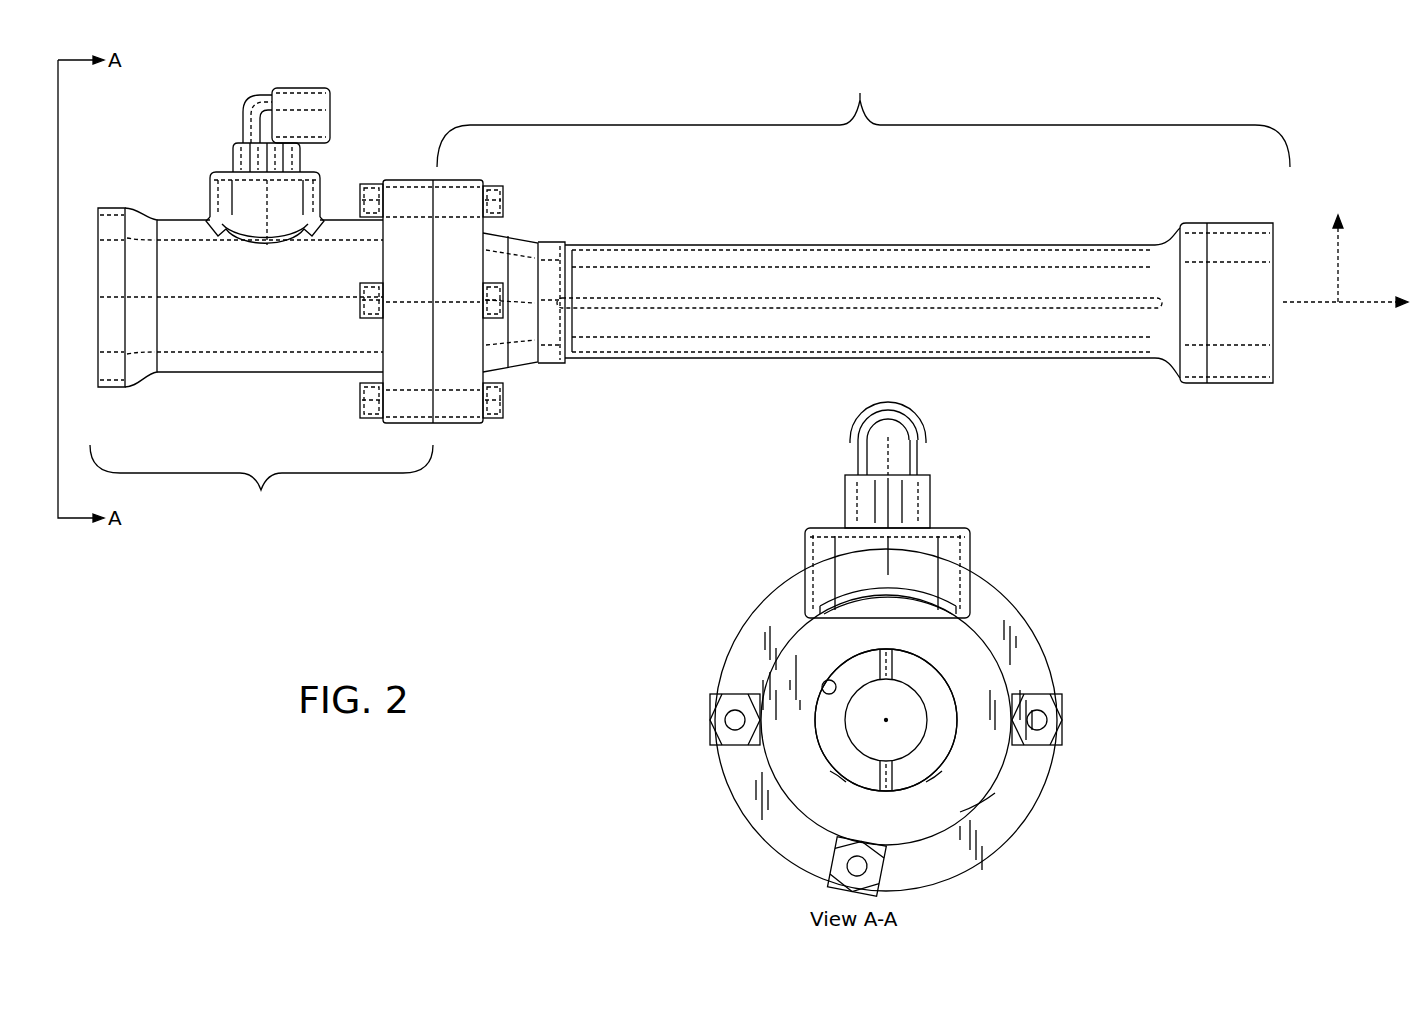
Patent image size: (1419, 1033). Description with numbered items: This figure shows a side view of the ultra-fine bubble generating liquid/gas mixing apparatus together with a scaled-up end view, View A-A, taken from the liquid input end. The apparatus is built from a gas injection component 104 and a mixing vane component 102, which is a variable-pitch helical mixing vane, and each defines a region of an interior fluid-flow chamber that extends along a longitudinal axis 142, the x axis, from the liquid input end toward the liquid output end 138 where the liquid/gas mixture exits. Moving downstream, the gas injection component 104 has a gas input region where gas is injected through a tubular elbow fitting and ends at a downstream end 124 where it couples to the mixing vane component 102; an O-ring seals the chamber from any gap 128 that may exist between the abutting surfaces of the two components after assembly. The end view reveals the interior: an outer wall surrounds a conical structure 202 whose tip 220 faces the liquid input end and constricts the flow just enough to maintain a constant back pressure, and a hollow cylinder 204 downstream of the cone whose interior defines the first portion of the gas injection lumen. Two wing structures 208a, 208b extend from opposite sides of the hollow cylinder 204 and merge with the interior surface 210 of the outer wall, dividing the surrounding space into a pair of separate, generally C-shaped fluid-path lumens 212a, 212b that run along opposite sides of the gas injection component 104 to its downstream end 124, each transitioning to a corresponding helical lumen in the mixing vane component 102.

The mixing vane component 102 is at (863, 221).
The gas injection component 104 is at (261, 375).
The downstream end 124 is at (1037, 633).
The gap 128 is at (433, 378).
The liquid output end 138 is at (1240, 386).
The longitudinal axis 142 is at (1372, 308).
The conical structure 202 is at (915, 718).
The hollow cylinder 204 is at (1029, 720).
The wing structure 208a is at (873, 655).
The wing structure 208b is at (892, 777).
The interior surface 210 is at (825, 691).
The fluid-path lumen 212a is at (851, 756).
The fluid-path lumen 212b is at (931, 752).
The tip 220 is at (888, 716).